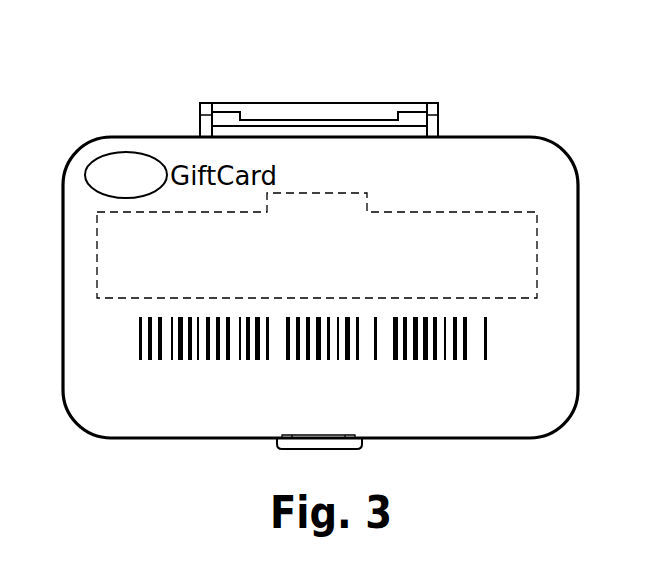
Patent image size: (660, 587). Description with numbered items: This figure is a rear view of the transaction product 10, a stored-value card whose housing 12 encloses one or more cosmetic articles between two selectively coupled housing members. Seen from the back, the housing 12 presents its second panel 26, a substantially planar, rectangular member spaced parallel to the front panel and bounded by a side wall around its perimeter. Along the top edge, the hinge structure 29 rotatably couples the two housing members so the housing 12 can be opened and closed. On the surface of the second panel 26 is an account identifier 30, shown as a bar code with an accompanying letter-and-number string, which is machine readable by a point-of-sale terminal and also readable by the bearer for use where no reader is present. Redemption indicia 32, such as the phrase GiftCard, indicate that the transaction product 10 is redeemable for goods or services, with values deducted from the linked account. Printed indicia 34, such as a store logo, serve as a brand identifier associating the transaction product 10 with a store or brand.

The transaction product 10 is at (459, 69).
The housing 12 is at (509, 126).
The second panel 26 is at (557, 267).
The hinge structure 29 is at (262, 115).
The account identifier 30 is at (487, 343).
The redemption indicia 32 is at (468, 212).
The printed indicia 34 is at (108, 153).